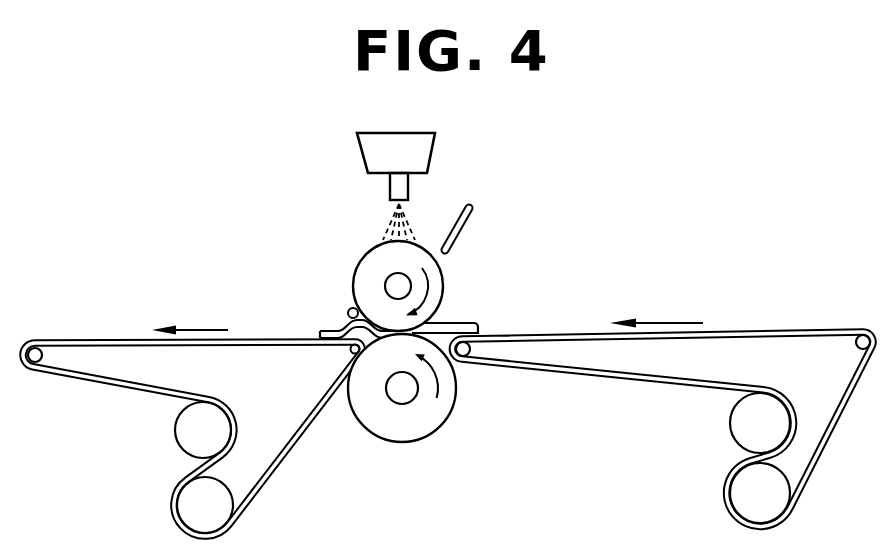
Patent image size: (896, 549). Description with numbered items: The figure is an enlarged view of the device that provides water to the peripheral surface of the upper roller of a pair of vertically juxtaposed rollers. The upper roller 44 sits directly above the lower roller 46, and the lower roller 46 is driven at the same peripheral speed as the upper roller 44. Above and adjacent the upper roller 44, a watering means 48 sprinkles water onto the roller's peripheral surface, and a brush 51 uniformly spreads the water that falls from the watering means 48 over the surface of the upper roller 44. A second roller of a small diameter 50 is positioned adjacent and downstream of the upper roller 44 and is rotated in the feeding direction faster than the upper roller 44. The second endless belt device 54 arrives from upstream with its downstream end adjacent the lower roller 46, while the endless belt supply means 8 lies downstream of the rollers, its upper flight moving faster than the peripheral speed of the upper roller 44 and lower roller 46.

The endless belt supply means 8 is at (72, 339).
The second endless belt device 54 is at (527, 337).
The upper roller 44 is at (443, 299).
The lower roller 46 is at (402, 443).
The watering means 48 is at (417, 150).
The second roller of a small diameter 50 is at (349, 309).
The brush 51 is at (469, 206).